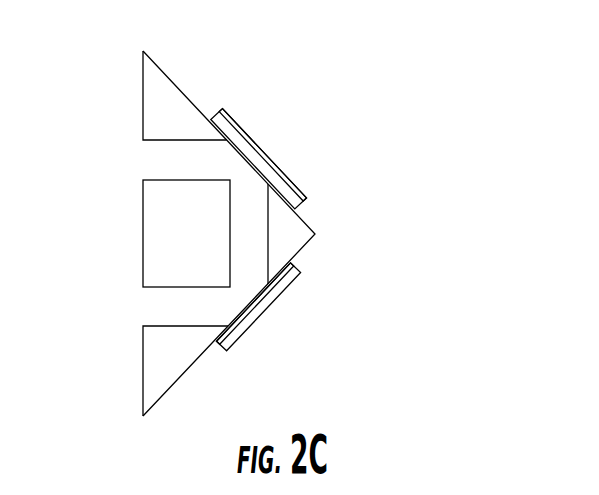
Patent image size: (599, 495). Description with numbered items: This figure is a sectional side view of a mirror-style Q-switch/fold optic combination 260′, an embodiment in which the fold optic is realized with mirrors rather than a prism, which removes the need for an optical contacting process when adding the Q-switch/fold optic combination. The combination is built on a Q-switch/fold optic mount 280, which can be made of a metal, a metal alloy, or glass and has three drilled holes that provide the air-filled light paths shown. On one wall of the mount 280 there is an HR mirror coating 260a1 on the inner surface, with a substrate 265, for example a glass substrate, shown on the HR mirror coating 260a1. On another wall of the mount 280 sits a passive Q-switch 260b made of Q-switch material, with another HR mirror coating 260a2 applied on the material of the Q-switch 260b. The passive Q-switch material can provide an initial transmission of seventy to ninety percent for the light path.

The mirror-style Q-switch/fold optic combination 260′ is at (450, 98).
The Q-switch/fold optic mount 280 is at (145, 389).
The passive Q-switch 260b is at (272, 170).
The HR mirror coating 260a2 is at (252, 122).
The substrate 265 is at (246, 327).
The HR mirror coating 260a1 is at (265, 296).